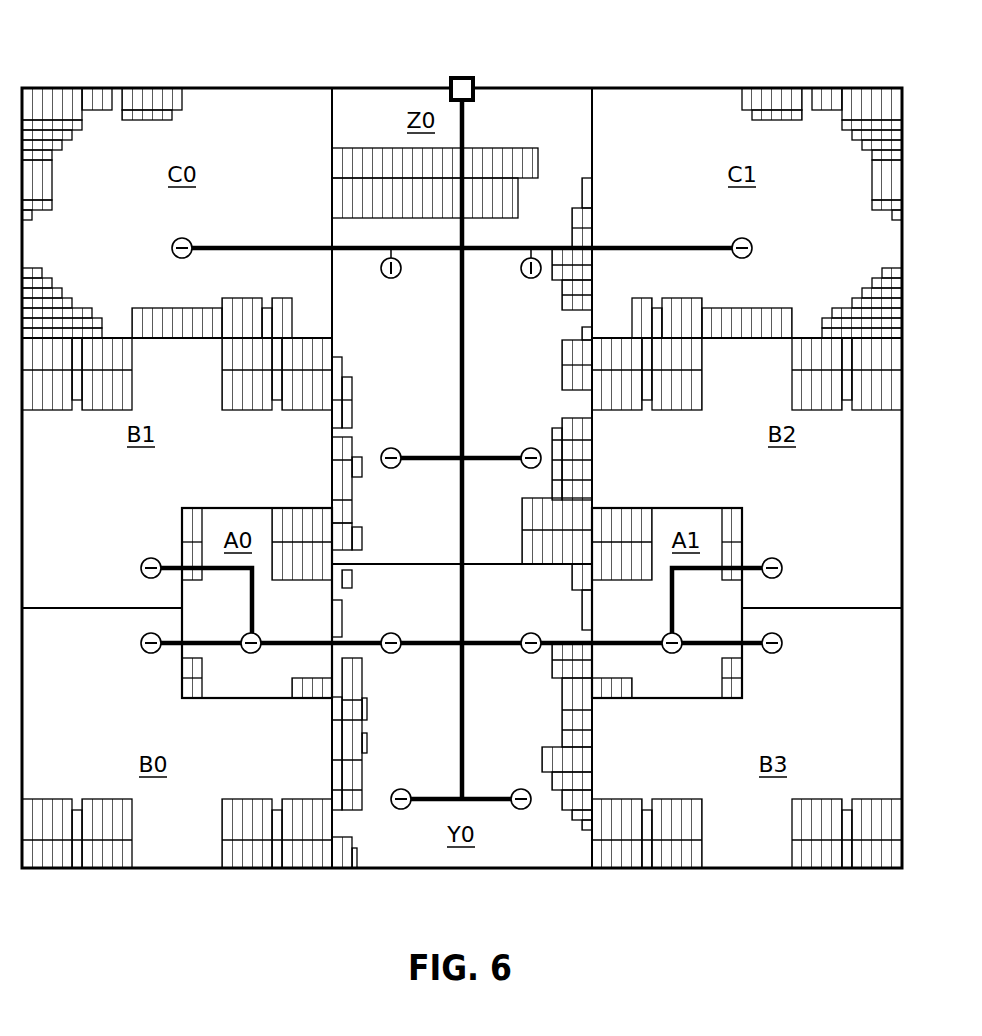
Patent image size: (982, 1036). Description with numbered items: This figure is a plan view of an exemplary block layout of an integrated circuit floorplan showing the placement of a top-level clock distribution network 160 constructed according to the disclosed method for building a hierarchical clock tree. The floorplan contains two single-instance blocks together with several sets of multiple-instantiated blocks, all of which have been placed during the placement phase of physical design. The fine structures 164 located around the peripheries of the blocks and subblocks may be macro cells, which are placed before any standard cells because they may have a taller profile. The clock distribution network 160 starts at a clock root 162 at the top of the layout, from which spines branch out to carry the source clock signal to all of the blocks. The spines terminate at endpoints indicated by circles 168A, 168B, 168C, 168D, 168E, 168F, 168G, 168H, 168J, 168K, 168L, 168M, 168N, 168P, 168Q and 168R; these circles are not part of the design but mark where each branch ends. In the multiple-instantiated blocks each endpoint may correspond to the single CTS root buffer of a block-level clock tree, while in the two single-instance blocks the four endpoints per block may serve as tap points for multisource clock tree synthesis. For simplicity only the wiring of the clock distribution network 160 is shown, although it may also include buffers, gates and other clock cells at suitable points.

The clock distribution network 160 is at (468, 117).
The clock root 162 is at (464, 76).
The fine structures 164 is at (866, 100).
The endpoint 168A is at (175, 242).
The endpoint 168B is at (395, 283).
The endpoint 168C is at (527, 283).
The endpoint 168D is at (749, 242).
The endpoint 168E is at (148, 553).
The endpoint 168F is at (395, 473).
The endpoint 168G is at (528, 445).
The endpoint 168H is at (774, 553).
The endpoint 168J is at (259, 632).
The endpoint 168K is at (665, 632).
The endpoint 168L is at (148, 657).
The endpoint 168M is at (395, 657).
The endpoint 168N is at (527, 657).
The endpoint 168P is at (775, 657).
The endpoint 168Q is at (405, 786).
The endpoint 168R is at (518, 786).